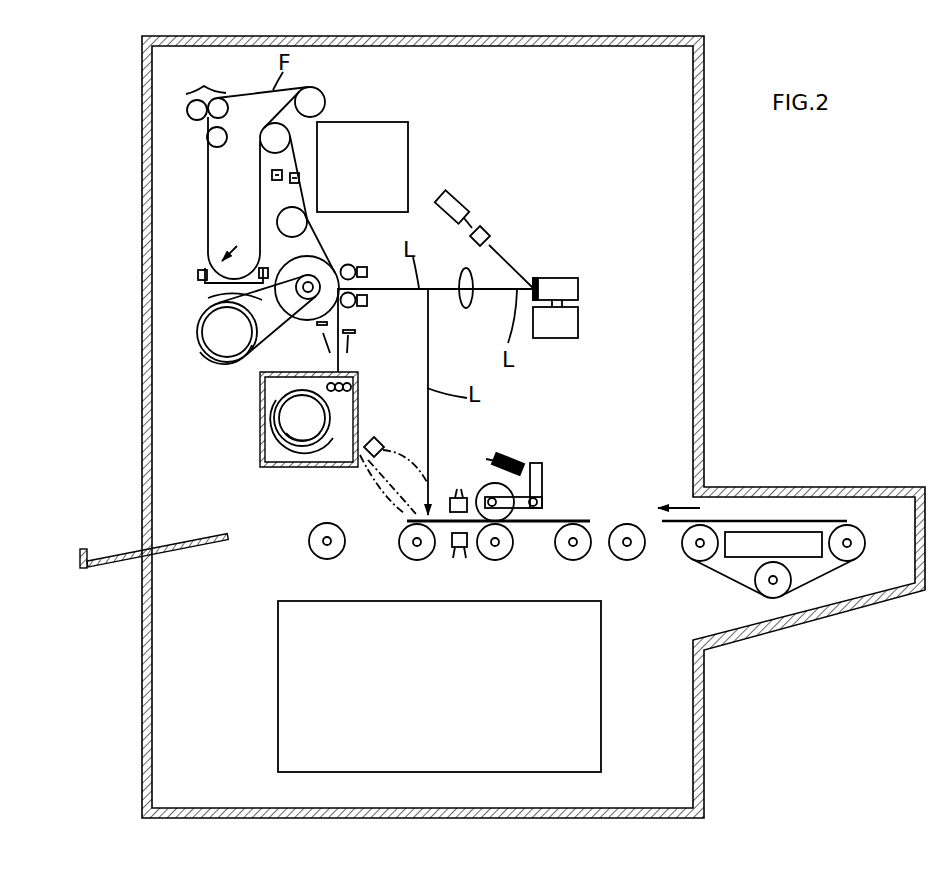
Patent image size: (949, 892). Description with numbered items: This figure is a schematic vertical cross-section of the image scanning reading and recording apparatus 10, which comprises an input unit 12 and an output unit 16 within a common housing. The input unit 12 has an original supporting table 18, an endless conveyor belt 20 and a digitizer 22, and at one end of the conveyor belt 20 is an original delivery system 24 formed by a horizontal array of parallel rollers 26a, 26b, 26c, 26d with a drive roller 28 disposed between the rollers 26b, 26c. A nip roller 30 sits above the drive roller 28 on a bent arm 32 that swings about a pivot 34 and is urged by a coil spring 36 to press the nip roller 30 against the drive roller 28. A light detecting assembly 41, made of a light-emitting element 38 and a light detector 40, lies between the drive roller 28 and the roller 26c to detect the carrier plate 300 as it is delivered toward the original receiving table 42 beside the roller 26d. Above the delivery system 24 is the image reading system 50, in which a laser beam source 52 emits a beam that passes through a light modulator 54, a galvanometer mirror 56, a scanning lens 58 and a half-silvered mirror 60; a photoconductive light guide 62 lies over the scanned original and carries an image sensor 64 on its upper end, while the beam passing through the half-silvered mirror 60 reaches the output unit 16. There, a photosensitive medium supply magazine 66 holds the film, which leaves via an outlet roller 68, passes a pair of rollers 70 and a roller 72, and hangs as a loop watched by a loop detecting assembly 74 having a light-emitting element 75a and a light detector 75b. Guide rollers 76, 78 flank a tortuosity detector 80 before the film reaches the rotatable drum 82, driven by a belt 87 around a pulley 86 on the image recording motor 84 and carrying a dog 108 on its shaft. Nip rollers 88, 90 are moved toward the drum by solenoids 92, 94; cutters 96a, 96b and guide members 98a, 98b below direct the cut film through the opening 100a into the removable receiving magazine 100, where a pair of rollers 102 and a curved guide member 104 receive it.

The image scanning reading and recording apparatus 10 is at (713, 223).
The input unit 12 is at (808, 483).
The output unit 16 is at (423, 162).
The original supporting table 18 is at (823, 520).
The endless conveyor belt 20 is at (723, 575).
The digitizer 22 is at (798, 547).
The original delivery system 24 is at (562, 492).
The parallel roller 26a is at (630, 560).
The parallel roller 26b is at (569, 560).
The parallel roller 26c is at (412, 560).
The parallel roller 26d is at (318, 558).
The drive roller 28 is at (499, 560).
The nip roller 30 is at (485, 487).
The bent arm 32 is at (545, 470).
The pivot 34 is at (533, 506).
The coil spring 36 is at (522, 458).
The light-emitting element 38 is at (457, 497).
The light detector 40 is at (455, 548).
The light detecting assembly 41 is at (441, 546).
The original receiving table 42 is at (122, 565).
The image reading system 50 is at (522, 263).
The laser beam source 52 is at (455, 203).
The light modulator 54 is at (490, 230).
The galvanometer mirror 56 is at (579, 288).
The scanning lens 58 is at (470, 304).
The half-silvered mirror 60 is at (428, 288).
The light guide 62 is at (364, 455).
The image sensor 64 is at (395, 500).
The photosensitive medium supply magazine 66 is at (392, 132).
The outlet roller 68 is at (312, 100).
The pair of rollers 70 is at (207, 86).
The roller 72 is at (219, 147).
The loop detecting assembly 74 is at (239, 240).
The light-emitting element 75a is at (200, 270).
The light detector 75b is at (268, 270).
The guide roller 76 is at (268, 136).
The guide roller 78 is at (298, 223).
The tortuosity detector 80 is at (299, 180).
The rotatable drum 82 is at (262, 345).
The image recording motor 84 is at (200, 352).
The pulley 86 is at (224, 360).
The belt 87 is at (240, 300).
The nip roller 88 is at (352, 265).
The nip roller 90 is at (352, 308).
The solenoid 92 is at (368, 273).
The solenoid 94 is at (368, 302).
The cutter 96a is at (317, 324).
The cutter 96b is at (357, 333).
The guide member 98a is at (322, 350).
The guide member 98b is at (352, 353).
The photosensitive medium receiving magazine 100 is at (280, 467).
The opening 100a is at (352, 390).
The pair of rollers 102 is at (276, 405).
The curved guide member 104 is at (270, 445).
The dog 108 is at (197, 332).
The carrier plate 300 is at (568, 518).